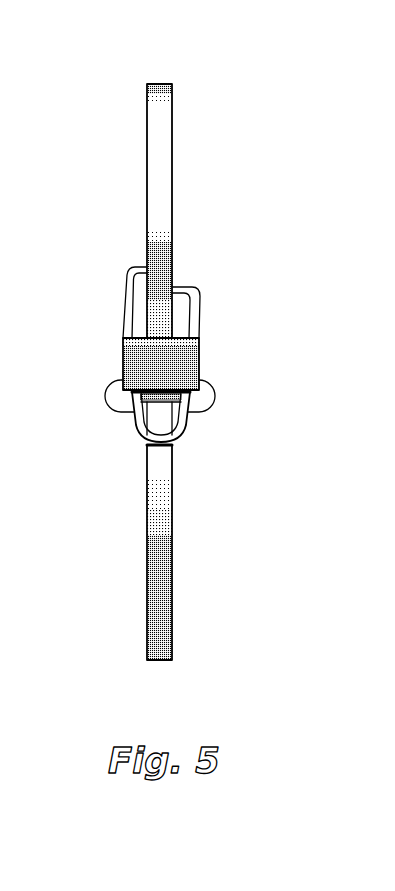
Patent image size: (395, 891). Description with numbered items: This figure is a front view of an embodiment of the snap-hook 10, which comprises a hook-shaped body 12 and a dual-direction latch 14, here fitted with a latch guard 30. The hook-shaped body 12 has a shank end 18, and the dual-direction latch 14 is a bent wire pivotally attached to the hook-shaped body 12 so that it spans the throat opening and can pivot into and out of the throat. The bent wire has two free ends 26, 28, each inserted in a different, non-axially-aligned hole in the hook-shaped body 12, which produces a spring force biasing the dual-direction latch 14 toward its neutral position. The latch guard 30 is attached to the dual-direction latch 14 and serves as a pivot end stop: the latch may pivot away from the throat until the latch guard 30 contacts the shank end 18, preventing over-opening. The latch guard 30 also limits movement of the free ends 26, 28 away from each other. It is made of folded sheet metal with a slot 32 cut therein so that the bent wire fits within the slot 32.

The snap-hook 10 is at (73, 82).
The hook-shaped body 12 is at (173, 557).
The dual-direction latch 14 is at (178, 442).
The shank end 18 is at (195, 84).
The free end 26 is at (140, 266).
The free end 28 is at (185, 284).
The latch guard 30 is at (200, 363).
The slot 32 is at (150, 392).